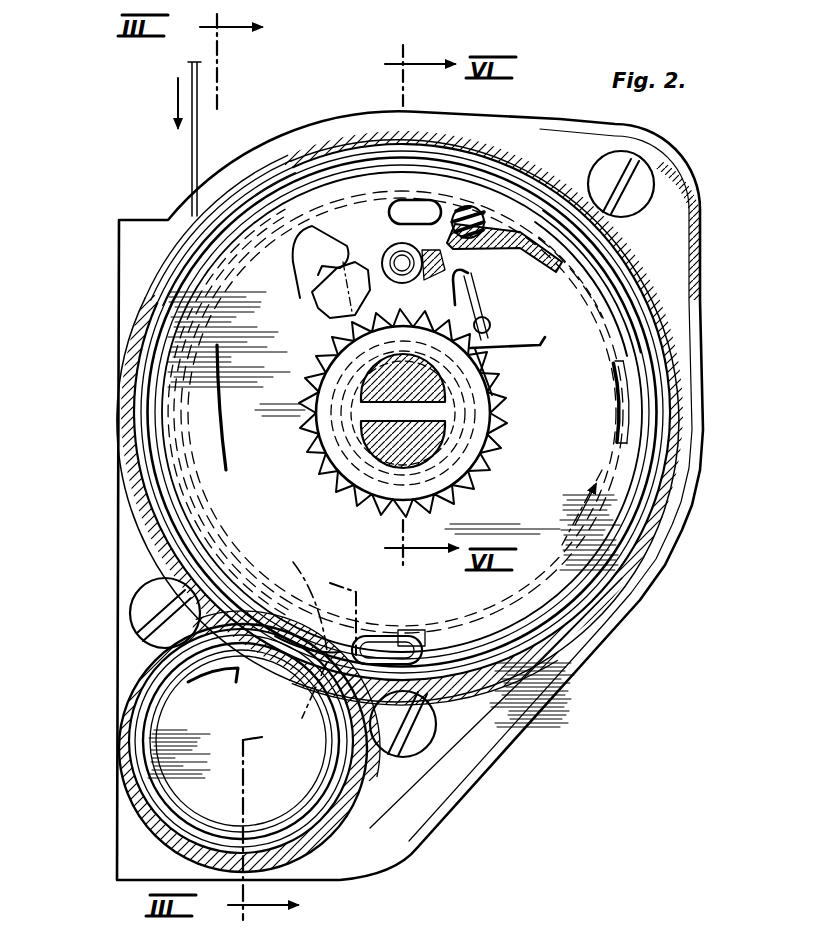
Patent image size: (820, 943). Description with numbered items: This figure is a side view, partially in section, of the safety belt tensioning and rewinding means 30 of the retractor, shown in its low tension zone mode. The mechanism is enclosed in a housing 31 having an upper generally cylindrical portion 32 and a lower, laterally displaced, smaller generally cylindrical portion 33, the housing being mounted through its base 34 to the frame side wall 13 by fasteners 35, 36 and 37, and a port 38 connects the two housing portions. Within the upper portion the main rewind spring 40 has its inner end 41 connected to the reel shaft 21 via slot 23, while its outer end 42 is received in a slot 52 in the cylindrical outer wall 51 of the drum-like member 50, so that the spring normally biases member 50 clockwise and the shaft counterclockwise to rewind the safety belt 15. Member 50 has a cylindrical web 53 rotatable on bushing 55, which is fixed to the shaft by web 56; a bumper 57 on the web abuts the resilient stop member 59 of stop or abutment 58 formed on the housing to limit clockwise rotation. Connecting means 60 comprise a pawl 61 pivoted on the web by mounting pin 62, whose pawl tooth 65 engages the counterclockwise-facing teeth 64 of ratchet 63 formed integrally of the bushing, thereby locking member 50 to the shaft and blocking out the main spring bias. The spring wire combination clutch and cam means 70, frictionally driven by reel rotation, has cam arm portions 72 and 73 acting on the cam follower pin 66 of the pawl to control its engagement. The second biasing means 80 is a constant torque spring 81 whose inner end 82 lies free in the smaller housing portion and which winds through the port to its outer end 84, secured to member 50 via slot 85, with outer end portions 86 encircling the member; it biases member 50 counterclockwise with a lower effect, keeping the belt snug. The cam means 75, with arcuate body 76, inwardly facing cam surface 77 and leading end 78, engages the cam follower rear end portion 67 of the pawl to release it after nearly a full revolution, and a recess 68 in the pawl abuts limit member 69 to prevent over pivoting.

The side wall 13 is at (690, 350).
The safety belt 15 is at (190, 66).
The shaft 21 is at (377, 430).
The slot 23 is at (437, 413).
The safety belt tensioning and rewinding means 30 is at (178, 210).
The housing 31 is at (152, 300).
The upper generally cylindrical portion 32 is at (672, 438).
The lower, laterally displaced, smaller generally cylindrical portion 33 is at (375, 785).
The base 34 is at (657, 223).
The fastener 35 is at (627, 173).
The fastener 36 is at (140, 603).
The fastener 37 is at (420, 732).
The port 38 is at (240, 680).
The main rewind spring 40 is at (612, 606).
The inner end 41 is at (377, 463).
The outer end 42 is at (306, 600).
The member 50 is at (200, 411).
The cylindrical outer wall 51 is at (318, 185).
The slot 52 is at (296, 712).
The cylindrical web 53 is at (280, 210).
The bushing 55 is at (330, 417).
The web 56 is at (367, 373).
The bumper 57 is at (412, 207).
The stop or abutment 58 is at (520, 232).
The resilient stop member 59 is at (458, 206).
The connecting means 60 is at (572, 347).
The pawl 61 is at (470, 300).
The mounting pin 62 is at (402, 262).
The ratchet 63 is at (477, 478).
The teeth 64 is at (450, 503).
The pawl tooth 65 is at (485, 345).
The cam follower pin 66 is at (490, 322).
The cam follower rear end portion 67 is at (298, 250).
The recess 68 is at (312, 284).
The limit member 69 is at (325, 310).
The spring wire combination clutch and cam means 70 is at (490, 407).
The cam arm portion 72 is at (462, 274).
The cam arm portion 73 is at (537, 360).
The cam means 75 is at (625, 345).
The arcuate body 76 is at (625, 407).
The cam surface 77 is at (618, 383).
The leading end 78 is at (627, 447).
The second biasing means 80 is at (116, 792).
The constant torque spring 81 is at (385, 860).
The inner end 82 is at (226, 680).
The outer end 84 is at (398, 640).
The slot 85 is at (360, 640).
The outer end portions 86 is at (640, 508).